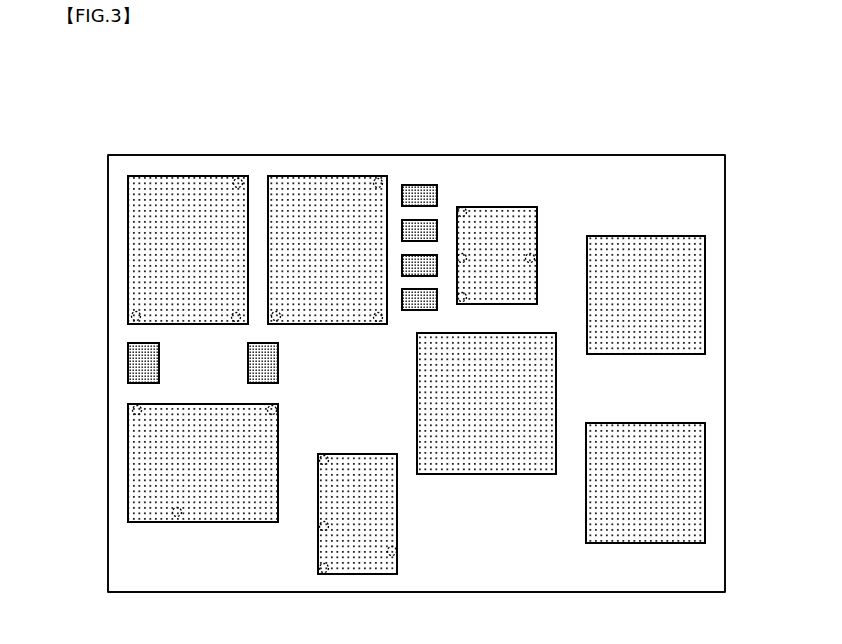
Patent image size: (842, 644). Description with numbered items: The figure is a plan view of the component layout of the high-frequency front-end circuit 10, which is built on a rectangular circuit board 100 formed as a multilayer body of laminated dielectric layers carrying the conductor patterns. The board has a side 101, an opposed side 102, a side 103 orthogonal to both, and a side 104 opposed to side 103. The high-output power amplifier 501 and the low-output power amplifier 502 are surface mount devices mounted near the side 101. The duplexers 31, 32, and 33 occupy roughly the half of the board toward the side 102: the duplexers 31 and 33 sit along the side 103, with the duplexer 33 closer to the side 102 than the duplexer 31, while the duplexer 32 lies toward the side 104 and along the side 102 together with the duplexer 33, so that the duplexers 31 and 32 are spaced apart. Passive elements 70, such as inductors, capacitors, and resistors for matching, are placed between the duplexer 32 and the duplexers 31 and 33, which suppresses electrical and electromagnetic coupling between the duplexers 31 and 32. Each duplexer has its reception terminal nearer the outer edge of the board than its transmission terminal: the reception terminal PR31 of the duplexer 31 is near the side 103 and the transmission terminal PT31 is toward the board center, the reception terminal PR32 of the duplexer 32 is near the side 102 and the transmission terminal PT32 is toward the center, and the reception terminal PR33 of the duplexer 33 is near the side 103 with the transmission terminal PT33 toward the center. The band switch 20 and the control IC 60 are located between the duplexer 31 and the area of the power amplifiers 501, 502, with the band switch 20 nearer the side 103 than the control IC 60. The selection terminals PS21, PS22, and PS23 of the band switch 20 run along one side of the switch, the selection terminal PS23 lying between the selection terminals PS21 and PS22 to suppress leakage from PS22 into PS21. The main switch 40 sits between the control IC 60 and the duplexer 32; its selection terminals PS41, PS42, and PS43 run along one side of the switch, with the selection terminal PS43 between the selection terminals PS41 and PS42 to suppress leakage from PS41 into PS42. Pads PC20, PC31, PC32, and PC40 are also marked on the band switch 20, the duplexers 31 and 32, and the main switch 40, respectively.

The high-frequency front-end circuit 10 is at (698, 102).
The circuit board 100 is at (712, 162).
The side 101 is at (725, 290).
The side 102 is at (108, 249).
The side 103 is at (578, 155).
The side 104 is at (617, 594).
The band switch 20 is at (535, 208).
The duplexer 31 is at (308, 176).
The duplexer 32 is at (229, 522).
The duplexer 33 is at (167, 176).
The main switch 40 is at (397, 492).
The control integrated circuit (IC) 60 is at (557, 383).
The passive elements 70 is at (430, 292).
The high-output power amplifier 501 is at (688, 236).
The low-output power amplifier 502 is at (687, 423).
The reception terminal PR31 is at (378, 179).
The reception terminal PR32 is at (133, 409).
The reception terminal PR33 is at (238, 179).
The transmission terminal PT31 is at (378, 321).
The transmission terminal PT32 is at (268, 408).
The transmission terminal PT33 is at (132, 314).
The center pad of component 20 PC20 is at (534, 255).
The center pad of component 31 PC31 is at (279, 319).
The center pad of component 32 PC32 is at (177, 517).
The center pad of component 40 PC40 is at (396, 549).
The selection terminal PS21 is at (466, 300).
The selection terminal PS22 is at (463, 208).
The selection terminal PS23 is at (465, 254).
The selection terminal PS41 is at (328, 574).
The selection terminal PS42 is at (326, 456).
The selection terminal PS43 is at (320, 529).